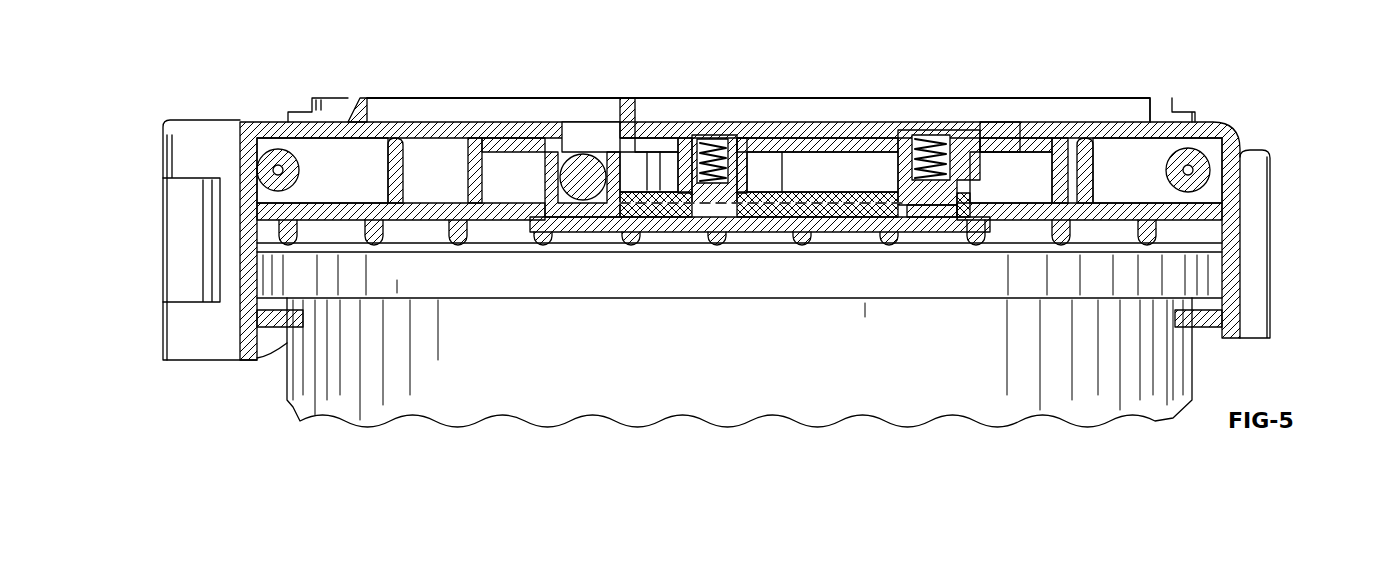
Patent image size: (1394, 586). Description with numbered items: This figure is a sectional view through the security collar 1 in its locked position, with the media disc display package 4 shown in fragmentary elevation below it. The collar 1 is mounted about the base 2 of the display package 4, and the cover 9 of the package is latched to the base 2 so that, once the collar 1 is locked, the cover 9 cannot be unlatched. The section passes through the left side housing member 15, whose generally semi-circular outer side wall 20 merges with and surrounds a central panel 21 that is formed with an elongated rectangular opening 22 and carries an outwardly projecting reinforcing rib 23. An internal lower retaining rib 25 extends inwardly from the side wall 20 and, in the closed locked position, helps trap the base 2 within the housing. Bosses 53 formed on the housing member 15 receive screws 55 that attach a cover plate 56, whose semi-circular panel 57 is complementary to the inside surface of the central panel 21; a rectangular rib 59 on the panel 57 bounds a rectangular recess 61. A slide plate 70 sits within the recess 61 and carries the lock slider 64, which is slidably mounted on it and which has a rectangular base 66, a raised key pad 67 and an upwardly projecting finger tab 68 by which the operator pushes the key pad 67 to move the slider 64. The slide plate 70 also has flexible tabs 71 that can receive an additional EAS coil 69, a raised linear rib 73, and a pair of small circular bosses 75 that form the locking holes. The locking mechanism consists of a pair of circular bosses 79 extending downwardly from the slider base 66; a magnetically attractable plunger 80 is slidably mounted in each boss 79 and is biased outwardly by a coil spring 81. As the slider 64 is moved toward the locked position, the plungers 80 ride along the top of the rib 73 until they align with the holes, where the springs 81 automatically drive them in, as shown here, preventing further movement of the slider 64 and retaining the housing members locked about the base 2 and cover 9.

The security collar 1 is at (724, 229).
The base 2 is at (652, 292).
The display package 4 is at (310, 402).
The cover 9 is at (300, 387).
The left side housing member 15 is at (1235, 92).
The outer side wall 20 is at (1257, 278).
The central panel 21 is at (395, 125).
The opening 22 is at (573, 128).
The reinforcing rib 23 is at (358, 97).
The lower retaining rib 25 is at (1200, 325).
The bosses 53 is at (266, 165).
The screws 55 is at (278, 172).
The cover plate 56 is at (503, 215).
The panel 57 is at (336, 206).
The rib 59 is at (430, 138).
The recess 61 is at (818, 216).
The lock slider 64 is at (768, 125).
The rectangular base 66 is at (1030, 150).
The key pad 67 is at (817, 125).
The finger tab 68 is at (627, 100).
The EAS coil 69 is at (595, 163).
The slide plate 70 is at (773, 213).
The flexible tabs 71 is at (545, 168).
The raised linear rib 73 is at (805, 195).
The circular bosses 75 is at (963, 192).
The circular bosses 79 is at (665, 160).
The plunger 80 is at (708, 193).
The coil spring 81 is at (718, 150).